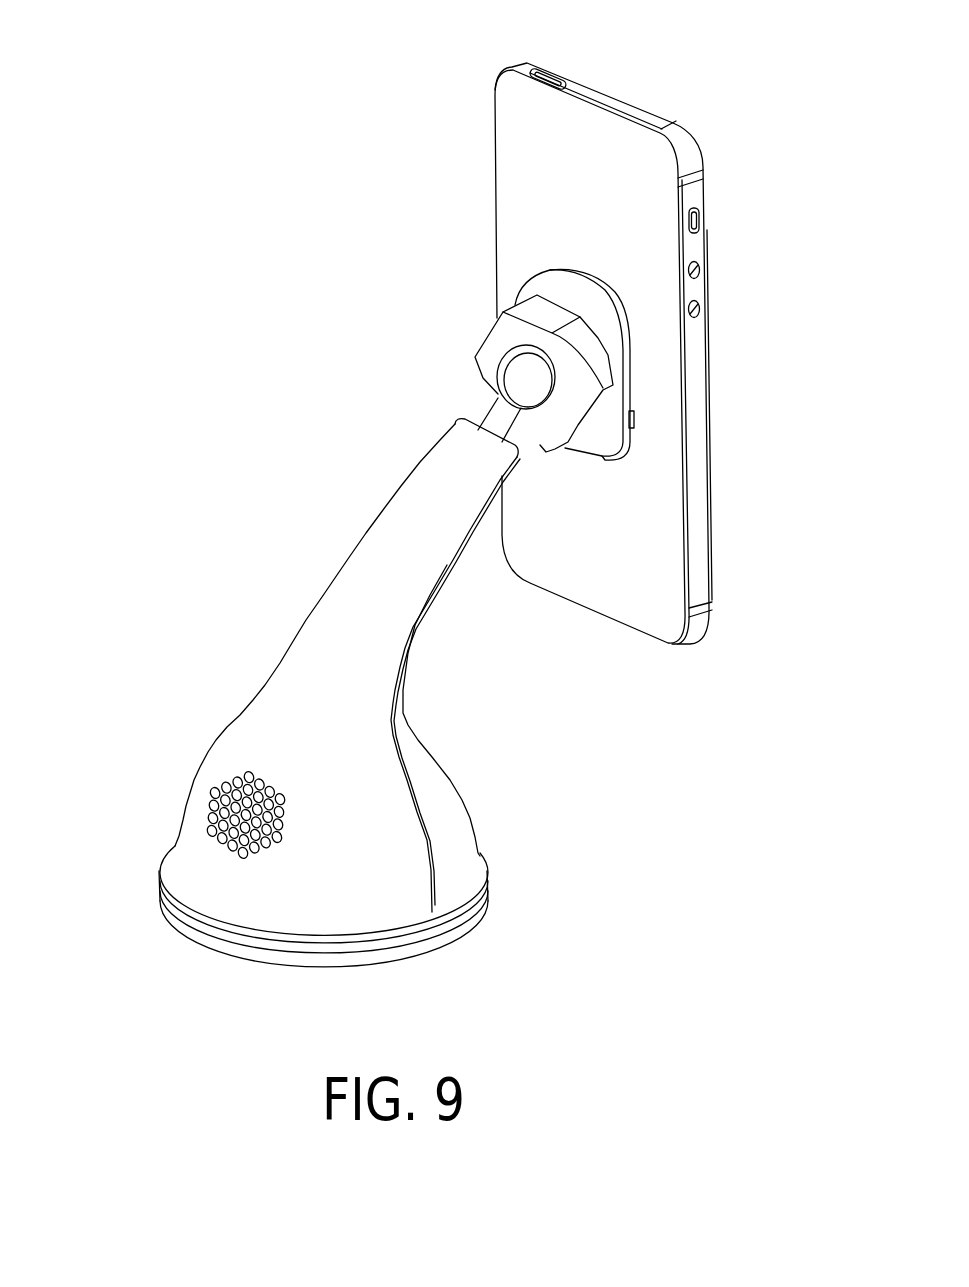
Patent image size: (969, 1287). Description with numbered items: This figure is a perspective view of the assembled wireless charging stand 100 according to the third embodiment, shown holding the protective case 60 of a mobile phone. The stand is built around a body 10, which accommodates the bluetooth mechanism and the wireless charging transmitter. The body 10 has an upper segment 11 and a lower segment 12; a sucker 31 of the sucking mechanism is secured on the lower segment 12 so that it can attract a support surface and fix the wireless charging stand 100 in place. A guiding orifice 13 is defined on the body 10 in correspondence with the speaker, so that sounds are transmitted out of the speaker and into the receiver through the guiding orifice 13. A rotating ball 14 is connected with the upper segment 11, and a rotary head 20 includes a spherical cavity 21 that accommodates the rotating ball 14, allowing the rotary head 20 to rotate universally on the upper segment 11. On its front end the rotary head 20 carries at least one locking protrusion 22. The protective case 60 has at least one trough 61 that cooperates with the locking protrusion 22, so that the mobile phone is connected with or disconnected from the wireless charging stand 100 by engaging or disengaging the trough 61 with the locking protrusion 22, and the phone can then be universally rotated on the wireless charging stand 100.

The wireless charging stand 100 is at (117, 47).
The body 10 is at (262, 662).
The upper segment 11 is at (475, 433).
The lower segment 12 is at (450, 798).
The guiding orifice 13 is at (208, 820).
The rotating ball 14 is at (513, 379).
The rotary head 20 is at (532, 314).
The spherical cavity 21 is at (502, 351).
The locking protrusion 22 is at (635, 425).
The sucker 31 is at (485, 909).
The protective case 60 is at (708, 334).
The trough 61 is at (635, 419).